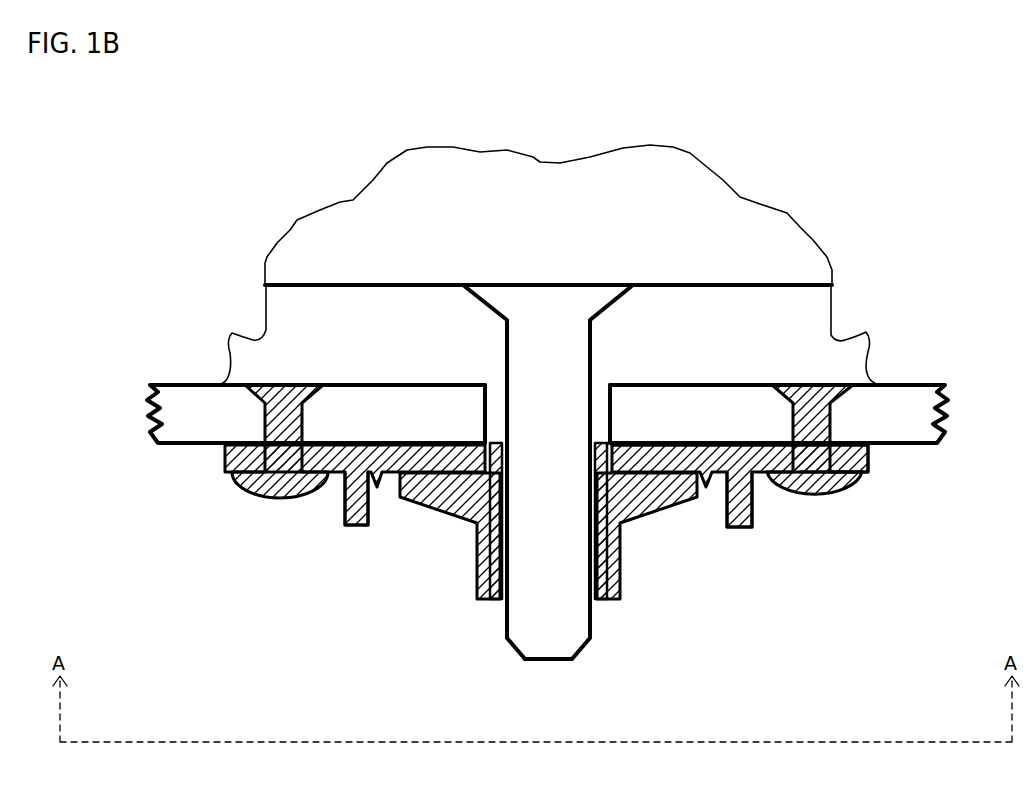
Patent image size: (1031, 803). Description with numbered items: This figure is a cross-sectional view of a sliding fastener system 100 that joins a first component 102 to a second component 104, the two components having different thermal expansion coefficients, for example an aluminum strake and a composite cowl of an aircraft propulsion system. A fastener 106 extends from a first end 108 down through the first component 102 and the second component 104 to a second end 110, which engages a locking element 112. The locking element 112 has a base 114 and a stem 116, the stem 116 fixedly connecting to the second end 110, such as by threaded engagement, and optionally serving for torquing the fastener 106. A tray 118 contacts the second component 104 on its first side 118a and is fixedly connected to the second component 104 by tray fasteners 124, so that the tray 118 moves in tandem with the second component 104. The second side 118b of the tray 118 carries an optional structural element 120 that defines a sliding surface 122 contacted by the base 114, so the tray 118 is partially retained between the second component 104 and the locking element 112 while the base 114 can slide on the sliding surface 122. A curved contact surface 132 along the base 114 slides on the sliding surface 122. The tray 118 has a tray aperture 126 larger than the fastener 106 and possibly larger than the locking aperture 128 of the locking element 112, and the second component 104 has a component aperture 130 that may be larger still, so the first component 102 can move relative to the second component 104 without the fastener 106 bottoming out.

The sliding fastener system 100 is at (859, 149).
The first component 102 is at (388, 326).
The second component 104 is at (188, 403).
The fastener 106 is at (563, 465).
The first end 108 is at (540, 310).
The second end 110 is at (548, 645).
The locking element 112 is at (539, 545).
The base 114 is at (452, 513).
The stem 116 is at (470, 575).
The tray 118 is at (232, 452).
The first side 118a is at (722, 440).
The second side 118b is at (867, 473).
The structural element 120 is at (356, 526).
The sliding surface 122 is at (377, 471).
The tray fasteners 124 is at (288, 488).
The tray aperture 126 is at (596, 433).
The locking aperture 128 is at (599, 614).
The component aperture 130 is at (497, 398).
The contact surface 132 is at (380, 483).